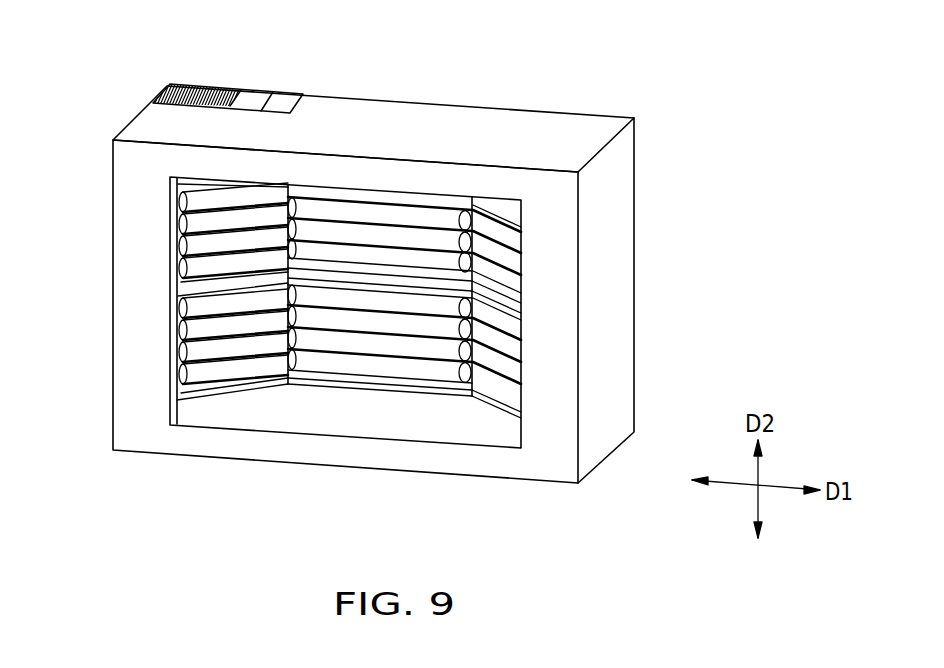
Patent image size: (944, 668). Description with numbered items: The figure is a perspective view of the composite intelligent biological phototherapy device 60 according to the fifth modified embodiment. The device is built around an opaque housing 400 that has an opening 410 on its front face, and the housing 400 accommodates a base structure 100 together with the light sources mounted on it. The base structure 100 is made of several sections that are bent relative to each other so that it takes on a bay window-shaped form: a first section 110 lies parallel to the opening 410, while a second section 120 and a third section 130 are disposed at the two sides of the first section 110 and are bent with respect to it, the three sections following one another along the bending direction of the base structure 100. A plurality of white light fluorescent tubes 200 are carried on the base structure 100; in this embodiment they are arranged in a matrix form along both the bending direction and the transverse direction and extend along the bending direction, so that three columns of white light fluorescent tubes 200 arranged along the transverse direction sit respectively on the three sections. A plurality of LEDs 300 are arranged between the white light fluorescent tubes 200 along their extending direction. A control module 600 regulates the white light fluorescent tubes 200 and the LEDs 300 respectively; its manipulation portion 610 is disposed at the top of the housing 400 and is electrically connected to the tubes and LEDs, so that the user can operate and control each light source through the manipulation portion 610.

The composite intelligent biological phototherapy device 60 is at (375, 279).
The base structure 100 is at (349, 304).
The first section 110 is at (400, 289).
The second section 120 is at (223, 392).
The third section 130 is at (508, 413).
The white light fluorescent tubes 200 is at (443, 220).
The LEDs 300 is at (390, 223).
The housing 400 is at (617, 268).
The opening 410 is at (197, 174).
The control module 600 is at (268, 69).
The manipulation portion 610 is at (252, 99).